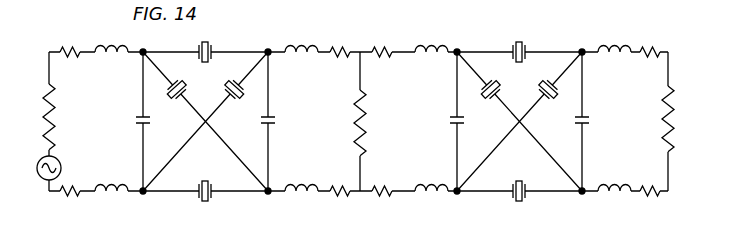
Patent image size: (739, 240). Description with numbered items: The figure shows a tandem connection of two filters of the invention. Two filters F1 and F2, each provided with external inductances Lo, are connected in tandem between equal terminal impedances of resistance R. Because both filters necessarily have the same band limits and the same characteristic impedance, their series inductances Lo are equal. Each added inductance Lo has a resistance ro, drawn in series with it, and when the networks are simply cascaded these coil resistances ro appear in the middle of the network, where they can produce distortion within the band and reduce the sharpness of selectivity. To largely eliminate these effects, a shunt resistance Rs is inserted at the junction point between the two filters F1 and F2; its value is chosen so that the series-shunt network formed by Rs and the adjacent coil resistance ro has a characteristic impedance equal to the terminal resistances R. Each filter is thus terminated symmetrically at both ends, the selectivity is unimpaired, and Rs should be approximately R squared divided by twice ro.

The terminal impedance of resistance R is at (42, 103).
The shunt resistance Rs is at (355, 110).
The filter F1 is at (216, 34).
The filter F2 is at (530, 34).
The coil resistance ro is at (361, 112).
The external inductance Lo is at (363, 108).